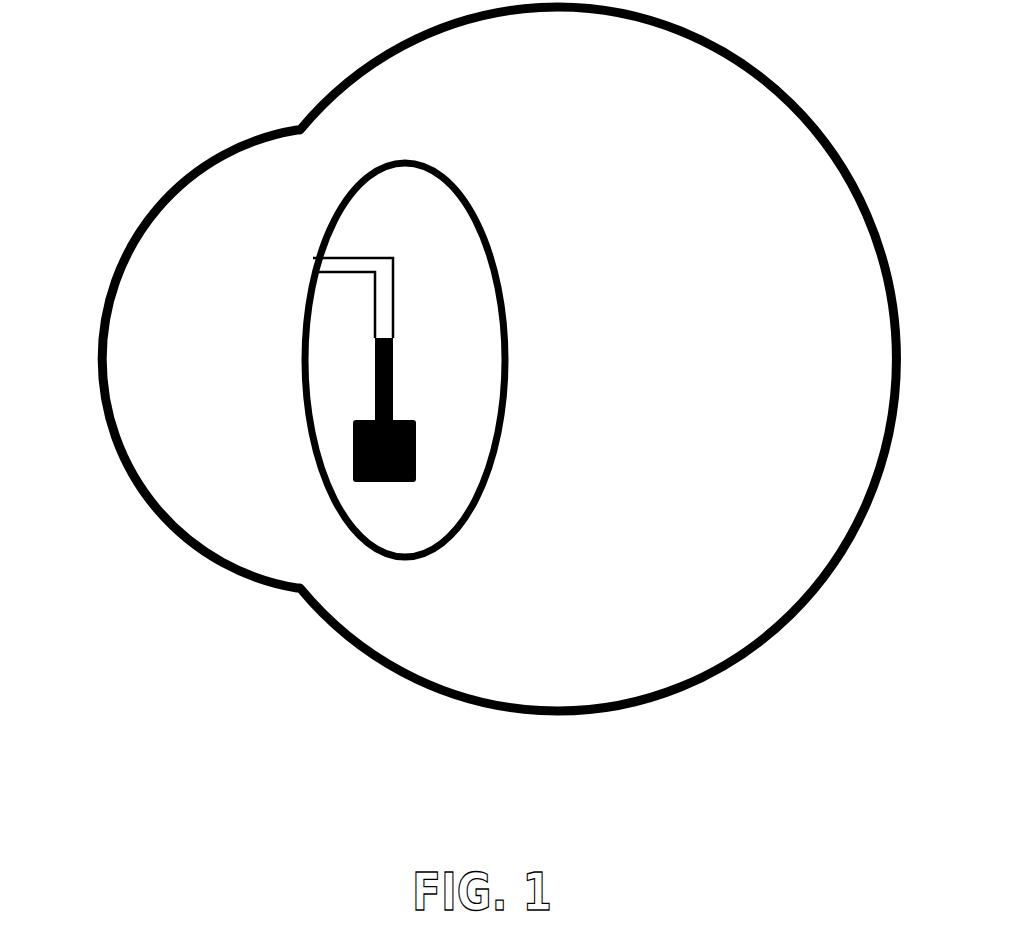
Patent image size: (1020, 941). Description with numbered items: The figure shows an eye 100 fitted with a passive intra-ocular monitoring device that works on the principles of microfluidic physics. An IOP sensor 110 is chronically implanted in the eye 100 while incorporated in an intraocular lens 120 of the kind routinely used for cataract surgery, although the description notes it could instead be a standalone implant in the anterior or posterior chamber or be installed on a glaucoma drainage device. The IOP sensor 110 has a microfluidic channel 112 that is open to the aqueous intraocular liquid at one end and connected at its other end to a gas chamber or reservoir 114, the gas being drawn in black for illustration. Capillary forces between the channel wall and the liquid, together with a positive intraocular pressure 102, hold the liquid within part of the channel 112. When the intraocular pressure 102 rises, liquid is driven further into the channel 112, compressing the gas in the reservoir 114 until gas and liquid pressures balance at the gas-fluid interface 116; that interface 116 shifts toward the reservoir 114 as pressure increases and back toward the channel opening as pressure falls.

The eye 100 is at (143, 713).
The intraocular pressure 102 is at (835, 365).
The IOP sensor 110 is at (399, 376).
The microfluidic channel 112 is at (304, 261).
The gas chamber or reservoir 114 is at (430, 457).
The gas-fluid interface 116 is at (358, 340).
The intraocular lens 120 is at (473, 510).